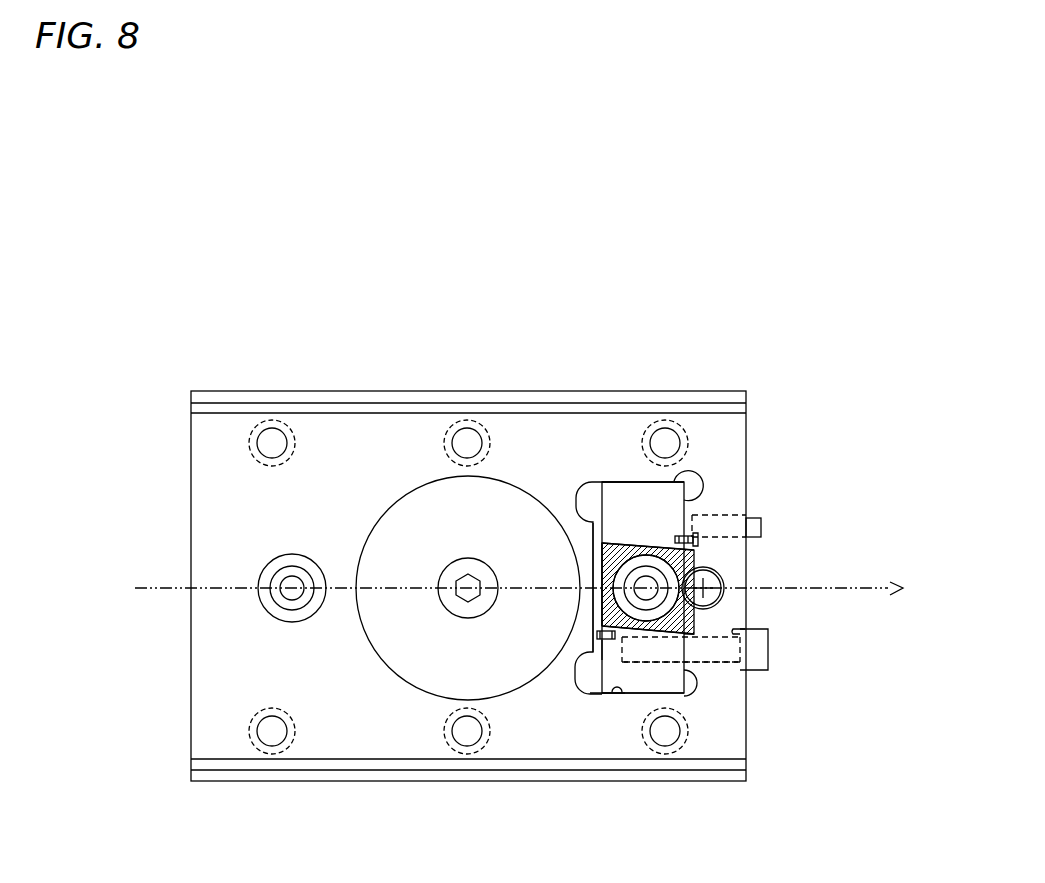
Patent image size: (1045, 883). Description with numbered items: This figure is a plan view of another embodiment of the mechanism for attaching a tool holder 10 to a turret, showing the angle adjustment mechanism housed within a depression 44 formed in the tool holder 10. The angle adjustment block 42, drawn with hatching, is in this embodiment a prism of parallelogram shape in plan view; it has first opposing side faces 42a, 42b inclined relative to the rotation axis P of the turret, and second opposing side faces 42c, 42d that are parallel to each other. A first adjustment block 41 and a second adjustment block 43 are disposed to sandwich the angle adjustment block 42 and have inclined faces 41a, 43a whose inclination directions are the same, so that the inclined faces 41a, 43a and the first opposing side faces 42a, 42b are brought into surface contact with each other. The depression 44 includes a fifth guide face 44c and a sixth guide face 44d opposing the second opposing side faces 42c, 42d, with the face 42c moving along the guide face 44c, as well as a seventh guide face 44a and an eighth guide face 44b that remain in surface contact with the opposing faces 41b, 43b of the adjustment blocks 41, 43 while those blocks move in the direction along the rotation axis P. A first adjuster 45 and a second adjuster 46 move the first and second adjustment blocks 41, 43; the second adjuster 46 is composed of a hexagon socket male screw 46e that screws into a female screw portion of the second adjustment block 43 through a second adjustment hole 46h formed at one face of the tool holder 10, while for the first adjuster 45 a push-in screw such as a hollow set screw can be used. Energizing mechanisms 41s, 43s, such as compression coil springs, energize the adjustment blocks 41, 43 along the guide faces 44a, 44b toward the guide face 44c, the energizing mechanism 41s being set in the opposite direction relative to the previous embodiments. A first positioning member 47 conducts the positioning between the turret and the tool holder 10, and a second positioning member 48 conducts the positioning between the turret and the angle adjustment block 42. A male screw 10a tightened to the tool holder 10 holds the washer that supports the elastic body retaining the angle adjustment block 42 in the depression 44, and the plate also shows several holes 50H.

The tool holder 10 is at (384, 391).
The male screw 10a is at (716, 594).
The first adjustment block 41 is at (664, 481).
The inclined face 41a is at (662, 498).
The third guide face 41b is at (620, 486).
The energizing mechanism 41s is at (697, 536).
The angle adjustment block 42 is at (694, 556).
The first opposing side face 42a is at (694, 549).
The first opposing side face 42b is at (694, 640).
The second opposing side face 42c is at (618, 636).
The second opposing side face 42d is at (600, 634).
The second adjustment block 43 is at (652, 686).
The inclined face 43a is at (668, 640).
The fourth guide face 43b is at (614, 692).
The energizing mechanism 43s is at (600, 656).
The depression 44 is at (590, 498).
The seventh guide face 44a is at (638, 482).
The eighth guide face 44b is at (637, 694).
The fifth guide face 44c is at (690, 612).
The sixth guide face 44d is at (582, 582).
The first adjuster 45 is at (696, 540).
The second adjuster 46 is at (768, 668).
The hexagon socket male screw 46e is at (735, 665).
The second adjustment hole 46h is at (734, 630).
The first positioning member 47 is at (282, 587).
The second positioning member 48 is at (712, 572).
The mounting holes 50H is at (272, 436).
The rotation axis P is at (930, 590).